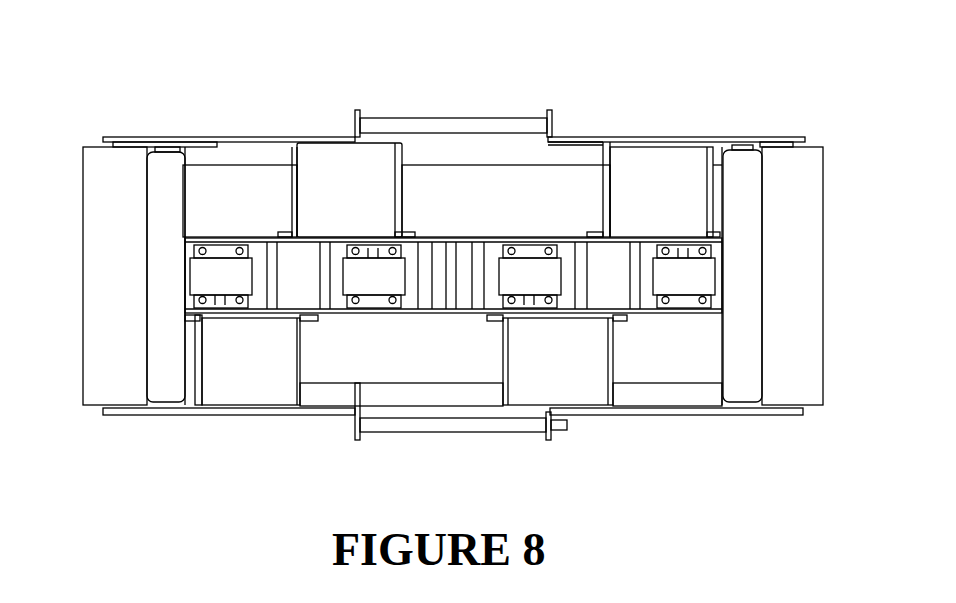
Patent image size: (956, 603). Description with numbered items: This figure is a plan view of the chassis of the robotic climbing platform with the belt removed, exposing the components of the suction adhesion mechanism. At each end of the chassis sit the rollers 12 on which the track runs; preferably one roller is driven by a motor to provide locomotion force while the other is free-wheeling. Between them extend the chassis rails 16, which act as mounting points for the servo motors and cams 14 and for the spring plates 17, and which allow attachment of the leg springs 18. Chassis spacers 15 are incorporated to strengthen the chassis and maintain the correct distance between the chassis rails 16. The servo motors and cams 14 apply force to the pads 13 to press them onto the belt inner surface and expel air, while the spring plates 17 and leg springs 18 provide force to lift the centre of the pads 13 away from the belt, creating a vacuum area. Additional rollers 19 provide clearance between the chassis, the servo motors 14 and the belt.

The roller 12 is at (122, 172).
The pad 13 is at (455, 263).
The servo motor and cam 14 is at (338, 200).
The chassis spacer 15 is at (612, 263).
The chassis rail 16 is at (265, 197).
The spring plate 17 is at (411, 250).
The leg spring 18 is at (248, 137).
The additional roller 19 is at (172, 177).